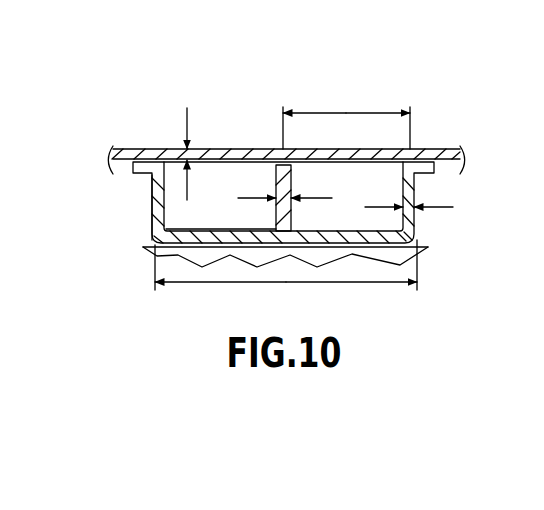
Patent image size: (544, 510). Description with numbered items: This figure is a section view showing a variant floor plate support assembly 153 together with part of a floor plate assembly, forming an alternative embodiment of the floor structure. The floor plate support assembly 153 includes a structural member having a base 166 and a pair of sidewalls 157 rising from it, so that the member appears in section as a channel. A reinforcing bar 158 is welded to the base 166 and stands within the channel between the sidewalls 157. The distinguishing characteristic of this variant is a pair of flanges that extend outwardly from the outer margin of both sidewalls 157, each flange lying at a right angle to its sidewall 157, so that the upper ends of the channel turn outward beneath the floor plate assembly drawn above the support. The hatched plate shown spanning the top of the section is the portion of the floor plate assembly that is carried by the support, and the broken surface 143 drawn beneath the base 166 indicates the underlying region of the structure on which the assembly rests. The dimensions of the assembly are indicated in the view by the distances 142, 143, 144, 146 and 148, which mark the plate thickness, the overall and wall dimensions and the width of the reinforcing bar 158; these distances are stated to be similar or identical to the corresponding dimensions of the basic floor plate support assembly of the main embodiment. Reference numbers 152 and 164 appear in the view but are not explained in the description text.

The distance 142 is at (187, 122).
The distance 143 is at (323, 283).
The distance 144 is at (437, 210).
The distance 146 is at (345, 113).
The distance 148 is at (318, 198).
The cover plate 152 is at (254, 149).
The floor plate support assembly 153 is at (152, 200).
The sidewall 157 is at (417, 192).
The reinforcing bar 158 is at (276, 181).
The cavity 164 is at (274, 230).
The base 166 is at (213, 247).